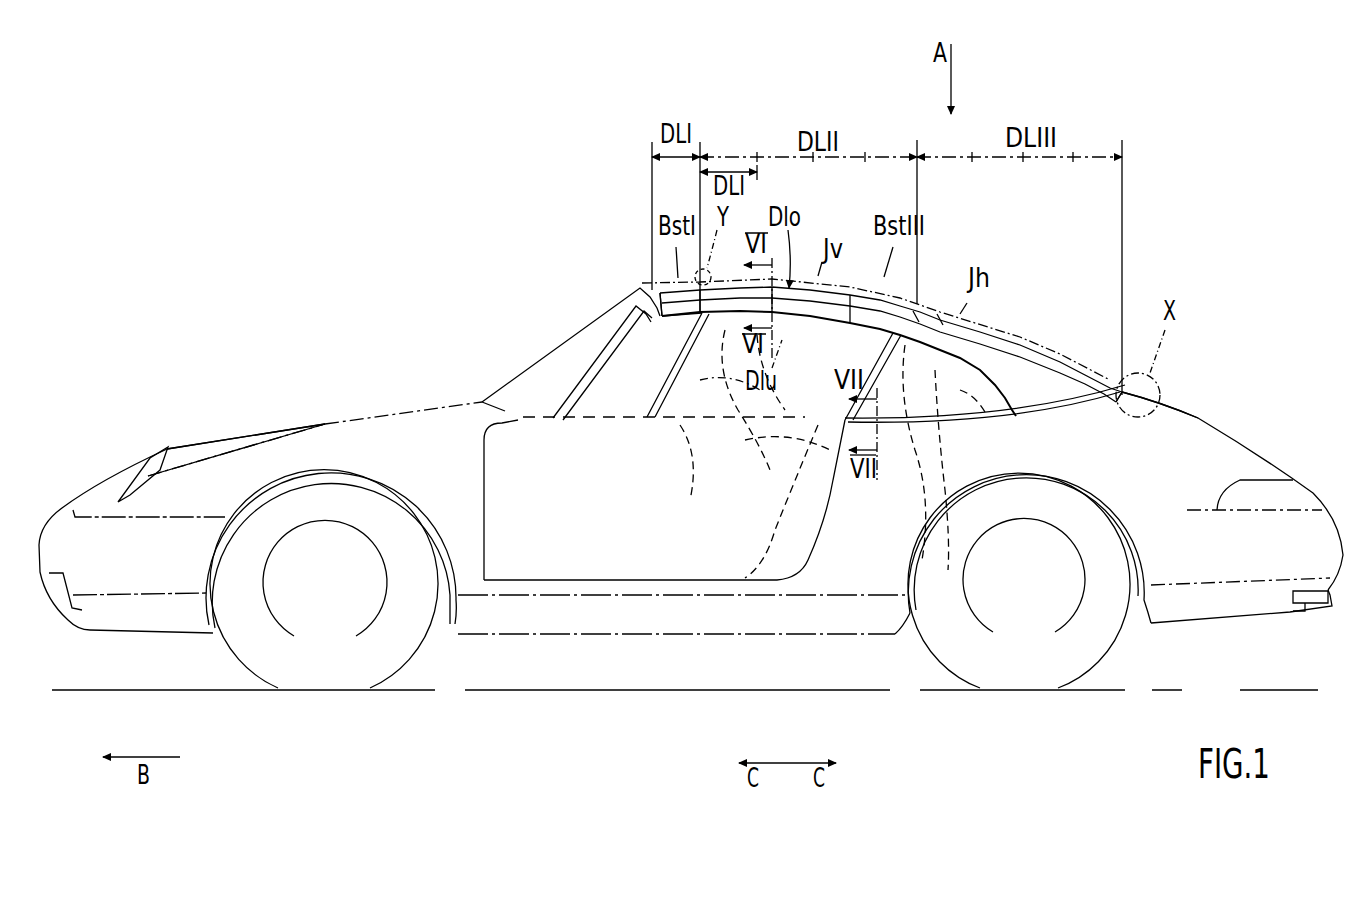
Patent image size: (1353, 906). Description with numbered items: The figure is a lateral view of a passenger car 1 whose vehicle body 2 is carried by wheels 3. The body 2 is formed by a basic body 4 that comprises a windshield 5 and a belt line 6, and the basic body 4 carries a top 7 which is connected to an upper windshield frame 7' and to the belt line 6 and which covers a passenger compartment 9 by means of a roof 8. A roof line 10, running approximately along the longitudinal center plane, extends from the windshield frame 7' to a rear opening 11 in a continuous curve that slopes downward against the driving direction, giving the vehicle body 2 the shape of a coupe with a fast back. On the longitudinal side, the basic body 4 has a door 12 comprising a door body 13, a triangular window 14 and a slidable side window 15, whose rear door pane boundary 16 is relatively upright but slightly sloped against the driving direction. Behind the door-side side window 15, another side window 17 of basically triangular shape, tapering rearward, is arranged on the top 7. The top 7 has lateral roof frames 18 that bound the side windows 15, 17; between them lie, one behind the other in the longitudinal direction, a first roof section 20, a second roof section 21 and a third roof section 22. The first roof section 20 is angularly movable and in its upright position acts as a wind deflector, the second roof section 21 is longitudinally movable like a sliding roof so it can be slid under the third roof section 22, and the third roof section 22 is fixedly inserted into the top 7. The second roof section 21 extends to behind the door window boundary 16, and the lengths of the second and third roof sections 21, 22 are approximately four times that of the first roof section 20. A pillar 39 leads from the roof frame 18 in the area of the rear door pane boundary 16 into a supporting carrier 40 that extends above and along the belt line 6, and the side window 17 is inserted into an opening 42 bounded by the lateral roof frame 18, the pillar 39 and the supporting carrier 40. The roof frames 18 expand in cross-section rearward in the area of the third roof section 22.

The passenger car 1 is at (1245, 383).
The vehicle body 2 is at (565, 639).
The wheels 3 is at (305, 672).
The basic body 4 is at (458, 402).
The windshield 5 is at (532, 378).
The belt line 6 is at (677, 412).
The top 7 is at (891, 327).
The upper windshield frame 7' is at (843, 313).
The roof 8 is at (704, 320).
The passenger compartment 9 is at (712, 330).
The roof line 10 is at (850, 287).
The rear opening 11 is at (1170, 383).
The door 12 is at (622, 583).
The door body 13 is at (515, 492).
The triangular window 14 is at (612, 395).
The slidable side window 15 is at (718, 400).
The rear door pane boundary 16 is at (882, 346).
The side window 17 is at (985, 378).
The lateral roof frames 18 is at (893, 300).
The first roof section 20 is at (655, 290).
The second roof section 21 is at (813, 280).
The third roof section 22 is at (1092, 358).
The pillar 39 is at (822, 448).
The supporting carrier 40 is at (980, 415).
The opening 42 is at (1020, 415).